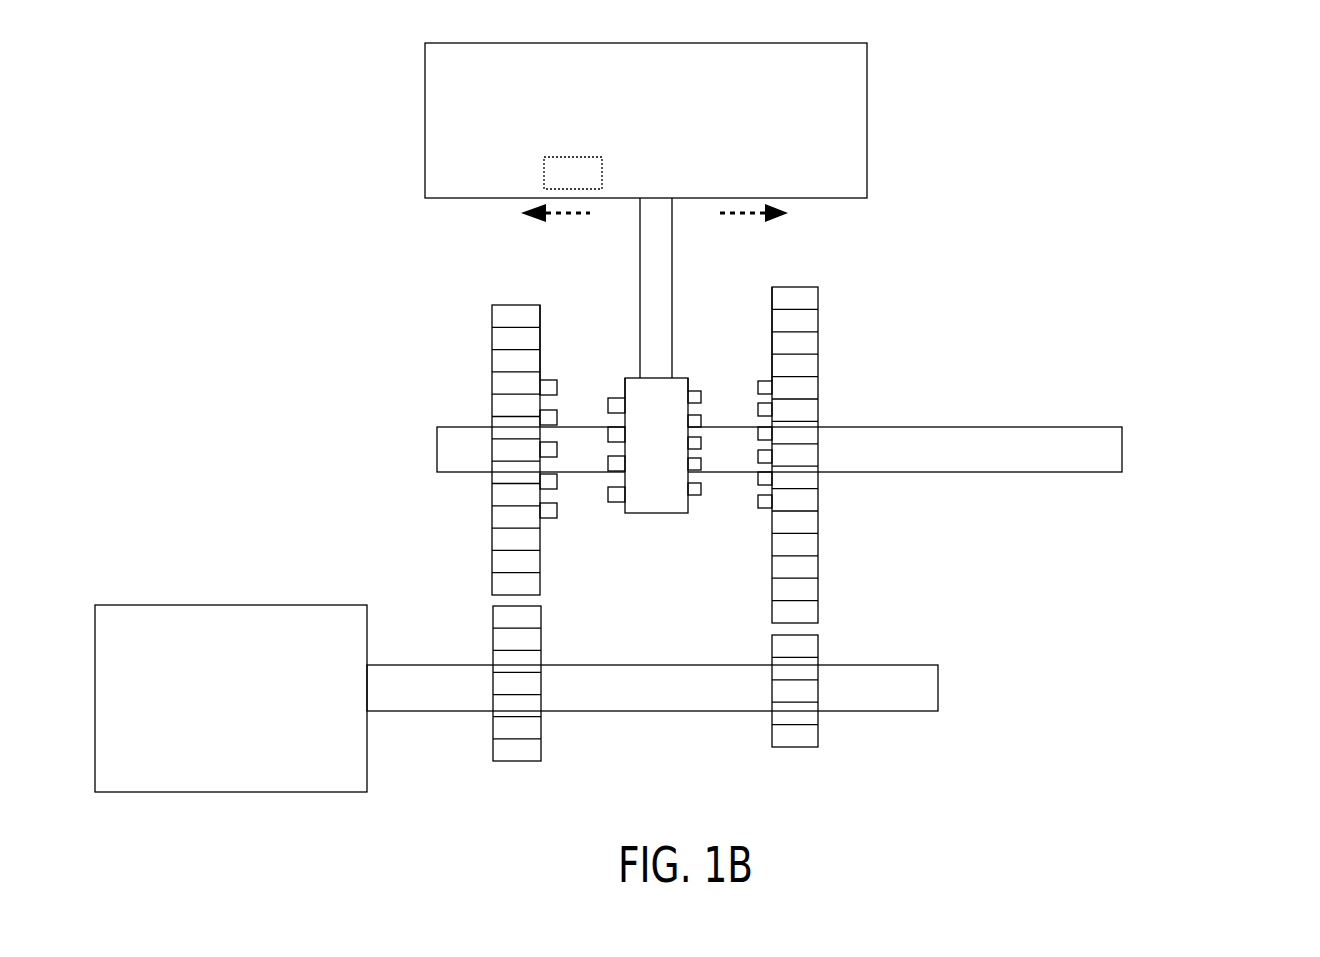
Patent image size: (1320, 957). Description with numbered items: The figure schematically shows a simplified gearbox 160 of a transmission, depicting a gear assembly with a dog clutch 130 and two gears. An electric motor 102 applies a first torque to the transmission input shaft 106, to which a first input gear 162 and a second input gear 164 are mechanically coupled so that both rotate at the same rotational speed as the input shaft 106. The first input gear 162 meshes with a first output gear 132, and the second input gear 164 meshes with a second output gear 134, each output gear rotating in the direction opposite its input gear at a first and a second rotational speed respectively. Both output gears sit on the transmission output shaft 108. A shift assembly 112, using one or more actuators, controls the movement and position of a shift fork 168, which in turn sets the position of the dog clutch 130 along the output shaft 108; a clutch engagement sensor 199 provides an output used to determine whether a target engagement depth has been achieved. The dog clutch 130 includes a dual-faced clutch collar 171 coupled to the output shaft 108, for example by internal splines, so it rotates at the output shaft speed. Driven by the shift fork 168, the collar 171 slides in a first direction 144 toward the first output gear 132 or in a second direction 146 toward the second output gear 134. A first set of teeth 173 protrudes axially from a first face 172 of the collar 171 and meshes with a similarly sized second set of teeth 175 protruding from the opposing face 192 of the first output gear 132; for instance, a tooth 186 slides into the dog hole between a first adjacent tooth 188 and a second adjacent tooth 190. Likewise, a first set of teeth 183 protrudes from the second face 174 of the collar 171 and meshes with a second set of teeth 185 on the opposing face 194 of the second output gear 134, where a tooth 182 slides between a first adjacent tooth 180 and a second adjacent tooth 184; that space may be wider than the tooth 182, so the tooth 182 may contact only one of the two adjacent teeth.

The electric motor 102 is at (248, 714).
The transmission input shaft 106 is at (626, 665).
The transmission output shaft 108 is at (1098, 426).
The shift assembly 112 is at (663, 131).
The clutch engagement sensor 199 is at (590, 184).
The dog clutch 130 is at (654, 433).
The first output gear 132 is at (501, 447).
The second output gear 134 is at (801, 436).
The first direction 144 is at (538, 219).
The second direction 146 is at (775, 217).
The simplified gearbox 160 is at (1230, 76).
The first input gear 162 is at (493, 745).
The second input gear 164 is at (772, 748).
The shift fork 168 is at (672, 232).
The dual-faced clutch collar 171 is at (673, 456).
The first face 172 is at (626, 378).
The first set of teeth 173 is at (611, 421).
The second face 174 is at (688, 378).
The second set of teeth 175 is at (561, 392).
The first adjacent tooth 180 is at (758, 509).
The tooth 182 is at (702, 496).
The first set of teeth 183 is at (699, 384).
The second adjacent tooth 184 is at (758, 488).
The second set of teeth 185 is at (757, 410).
The tooth 186 is at (613, 503).
The first adjacent tooth 188 is at (556, 489).
The second adjacent tooth 190 is at (557, 518).
The opposing face 192 is at (541, 306).
The opposing face 194 is at (772, 285).